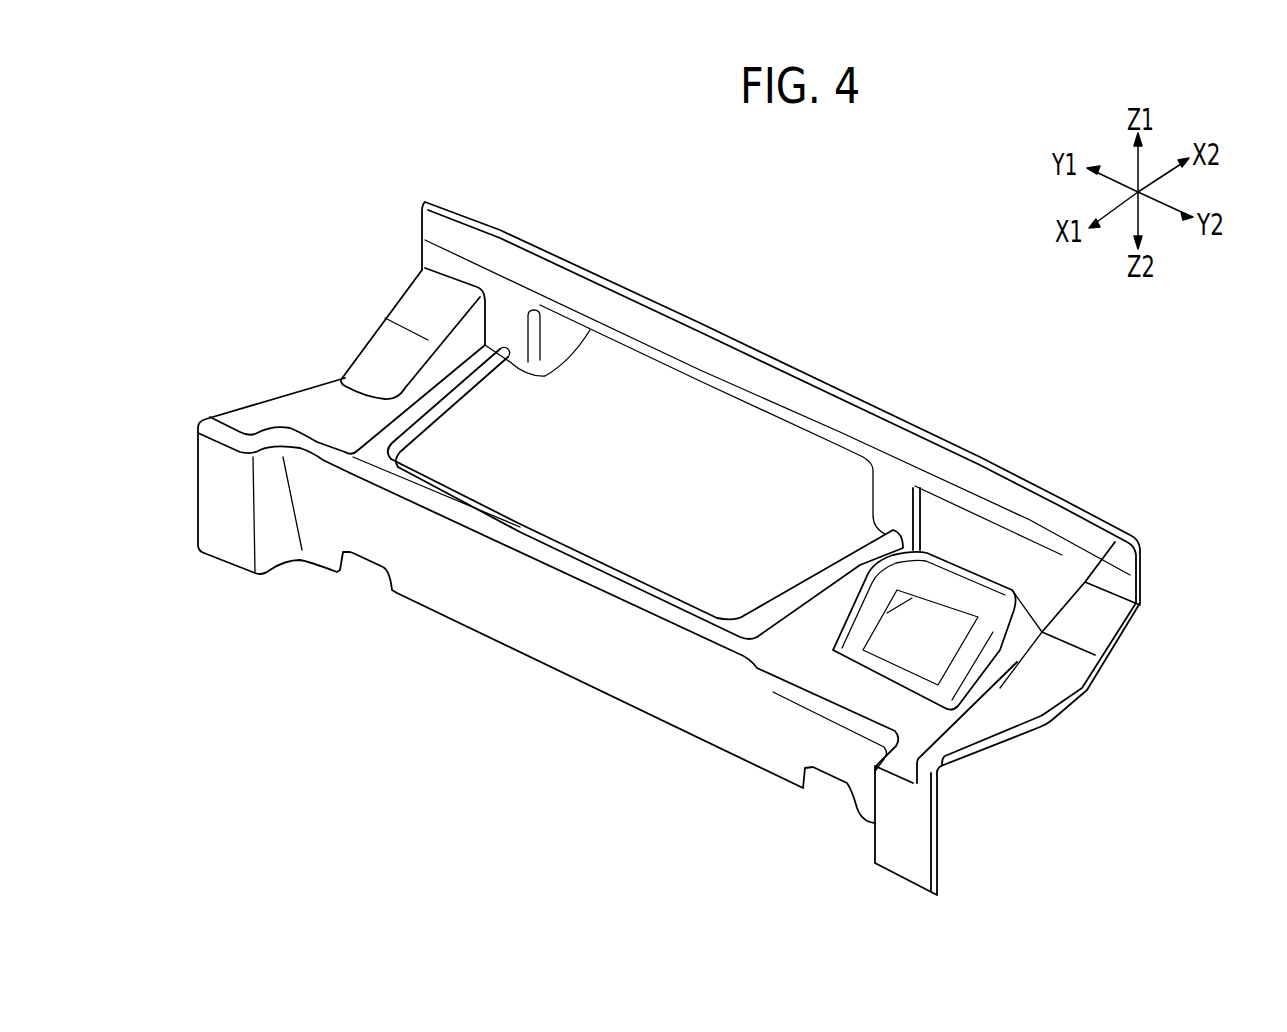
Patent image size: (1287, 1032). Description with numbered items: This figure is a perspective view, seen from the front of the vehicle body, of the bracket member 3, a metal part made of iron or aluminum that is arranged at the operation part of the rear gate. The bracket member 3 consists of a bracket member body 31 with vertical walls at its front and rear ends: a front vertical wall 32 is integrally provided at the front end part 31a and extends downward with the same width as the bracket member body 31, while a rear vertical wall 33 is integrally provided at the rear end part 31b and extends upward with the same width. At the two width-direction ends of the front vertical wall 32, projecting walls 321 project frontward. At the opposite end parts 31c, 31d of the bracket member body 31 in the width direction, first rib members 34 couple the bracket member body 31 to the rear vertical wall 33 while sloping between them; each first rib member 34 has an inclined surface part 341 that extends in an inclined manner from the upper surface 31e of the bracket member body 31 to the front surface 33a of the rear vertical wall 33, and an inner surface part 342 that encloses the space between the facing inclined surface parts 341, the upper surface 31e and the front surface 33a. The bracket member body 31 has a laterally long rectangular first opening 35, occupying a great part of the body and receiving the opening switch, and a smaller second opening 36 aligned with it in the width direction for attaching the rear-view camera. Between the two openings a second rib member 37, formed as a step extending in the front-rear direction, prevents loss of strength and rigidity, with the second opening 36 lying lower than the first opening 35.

The bracket member 3 is at (533, 128).
The bracket member body 31 is at (238, 405).
The front end part 31a is at (553, 550).
The rear end part 31b is at (558, 372).
The end part 31c is at (338, 392).
The end part 31d is at (1045, 610).
The upper surface 31e is at (283, 412).
The front vertical wall 32 is at (618, 700).
The projecting wall 321 is at (222, 546).
The rear vertical wall 33 is at (897, 443).
The front surface 33a is at (508, 297).
The first rib member 34 is at (450, 120).
The inclined surface part 341 is at (418, 297).
The inner surface part 342 is at (468, 323).
The first opening 35 is at (680, 427).
The second opening 36 is at (928, 621).
The second rib member 37 is at (793, 640).